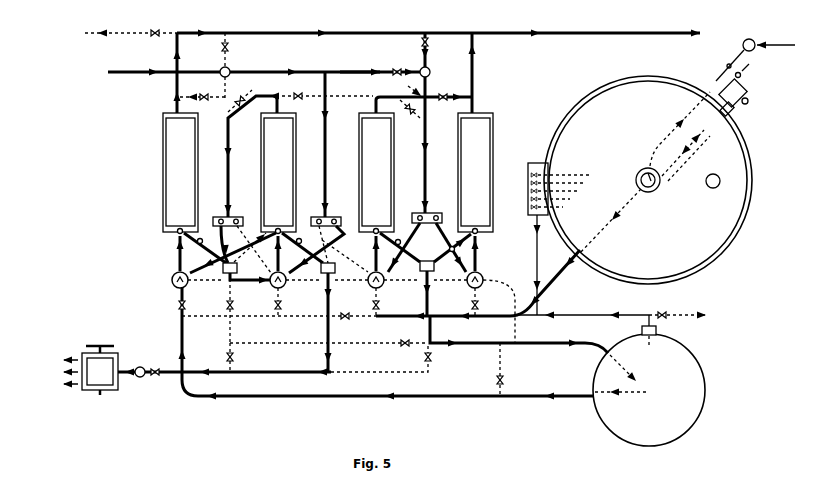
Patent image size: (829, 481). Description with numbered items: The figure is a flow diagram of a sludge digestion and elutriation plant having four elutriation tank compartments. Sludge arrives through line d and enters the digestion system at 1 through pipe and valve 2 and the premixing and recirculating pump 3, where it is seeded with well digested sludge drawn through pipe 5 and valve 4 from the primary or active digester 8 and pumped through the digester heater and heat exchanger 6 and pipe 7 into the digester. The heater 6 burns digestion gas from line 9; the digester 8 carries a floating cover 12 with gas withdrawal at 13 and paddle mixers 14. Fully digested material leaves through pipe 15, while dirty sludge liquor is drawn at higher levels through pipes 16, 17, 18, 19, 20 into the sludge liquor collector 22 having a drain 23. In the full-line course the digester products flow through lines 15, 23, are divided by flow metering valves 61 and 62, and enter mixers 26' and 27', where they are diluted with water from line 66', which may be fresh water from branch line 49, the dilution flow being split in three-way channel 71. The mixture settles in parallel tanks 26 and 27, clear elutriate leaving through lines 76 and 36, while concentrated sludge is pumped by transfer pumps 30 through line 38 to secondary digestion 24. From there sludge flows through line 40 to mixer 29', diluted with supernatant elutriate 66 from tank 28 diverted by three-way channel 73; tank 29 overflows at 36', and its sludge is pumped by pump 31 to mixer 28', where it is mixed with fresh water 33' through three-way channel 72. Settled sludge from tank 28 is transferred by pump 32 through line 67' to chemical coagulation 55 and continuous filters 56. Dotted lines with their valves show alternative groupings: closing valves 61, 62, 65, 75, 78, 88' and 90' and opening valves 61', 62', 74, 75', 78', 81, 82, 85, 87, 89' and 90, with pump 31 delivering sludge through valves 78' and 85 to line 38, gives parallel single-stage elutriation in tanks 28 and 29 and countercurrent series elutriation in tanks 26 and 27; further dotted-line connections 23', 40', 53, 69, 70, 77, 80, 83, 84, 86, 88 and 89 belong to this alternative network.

The digestion system inlet 1 is at (741, 65).
The pipe and valve 2 is at (740, 46).
The premixing and recirculating pump 3 is at (746, 73).
The valve 4 is at (721, 66).
The pipe 5 is at (676, 132).
The digester heater and heat exchanger 6 is at (740, 111).
The pipe 7 is at (700, 142).
The primary or active digester 8 is at (742, 240).
The digestion gas line 9 is at (661, 172).
The floating cover 12 is at (648, 180).
The gas withdrawal 13 is at (655, 190).
The paddle mixer 14 is at (711, 188).
The pipe 15 is at (584, 250).
The pipe 16 is at (574, 173).
The pipe 17 is at (571, 185).
The pipe 18 is at (567, 197).
The pipe 19 is at (563, 207).
The pipe 20 is at (567, 212).
The sludge liquor collector 22 is at (528, 163).
The drain 23 is at (526, 265).
The line 23' is at (582, 307).
The secondary digester 24 is at (661, 380).
The elutriation tank 26 is at (475, 173).
The elutriation tank 27 is at (376, 173).
The elutriation tank 28 is at (278, 173).
The elutriation tank 29 is at (180, 173).
The mixer 26' is at (491, 262).
The mixer 27' is at (385, 268).
The mixer 28' is at (288, 268).
The mixer 29' is at (189, 268).
The transfer pump 30 is at (434, 275).
The pump 31 is at (240, 276).
The pump 32 is at (338, 317).
The fresh water 33' is at (253, 141).
The elutriate outlet line 36 is at (545, 60).
The elutriate overflow 36' is at (420, 62).
The line 38 is at (541, 316).
The line 40 is at (415, 386).
The branch line 40' is at (515, 362).
The branch line 49 is at (360, 63).
The valve 53 is at (156, 378).
The chemical coagulation 55 is at (150, 364).
The continuous filters 56 is at (90, 361).
The flow metering valve 61 is at (484, 302).
The valve 61' is at (170, 330).
The flow metering valve 62 is at (387, 302).
The valve 62' is at (292, 310).
The valve 65 is at (415, 43).
The supernatant elutriate 66 is at (251, 156).
The dilution water line 66' is at (415, 123).
The line 67' is at (256, 363).
The valve 69 is at (396, 63).
The distributor 70 is at (432, 75).
The three-way channel or valve 71 is at (434, 211).
The three-way channel 72 is at (333, 214).
The three-way channel or valve 73 is at (235, 214).
The valve 74 is at (324, 111).
The valve 75 is at (448, 105).
The valve 75' is at (202, 105).
The elutriate line 76 is at (409, 89).
The distributor 77 is at (235, 80).
The valve 78 is at (412, 305).
The valve 78' is at (244, 308).
The valve 80 is at (321, 89).
The valve 81 is at (236, 66).
The valve 82 is at (131, 25).
The valve 83 is at (225, 357).
The valve 84 is at (279, 322).
The valve 85 is at (329, 336).
The valve 86 is at (390, 357).
The valve 87 is at (491, 369).
The line 88 is at (453, 247).
The valve 88' is at (401, 247).
The line 89 is at (231, 253).
The valve 89' is at (252, 246).
The valve 90 is at (345, 256).
The valve 90' is at (316, 249).
The sludge line d is at (776, 37).